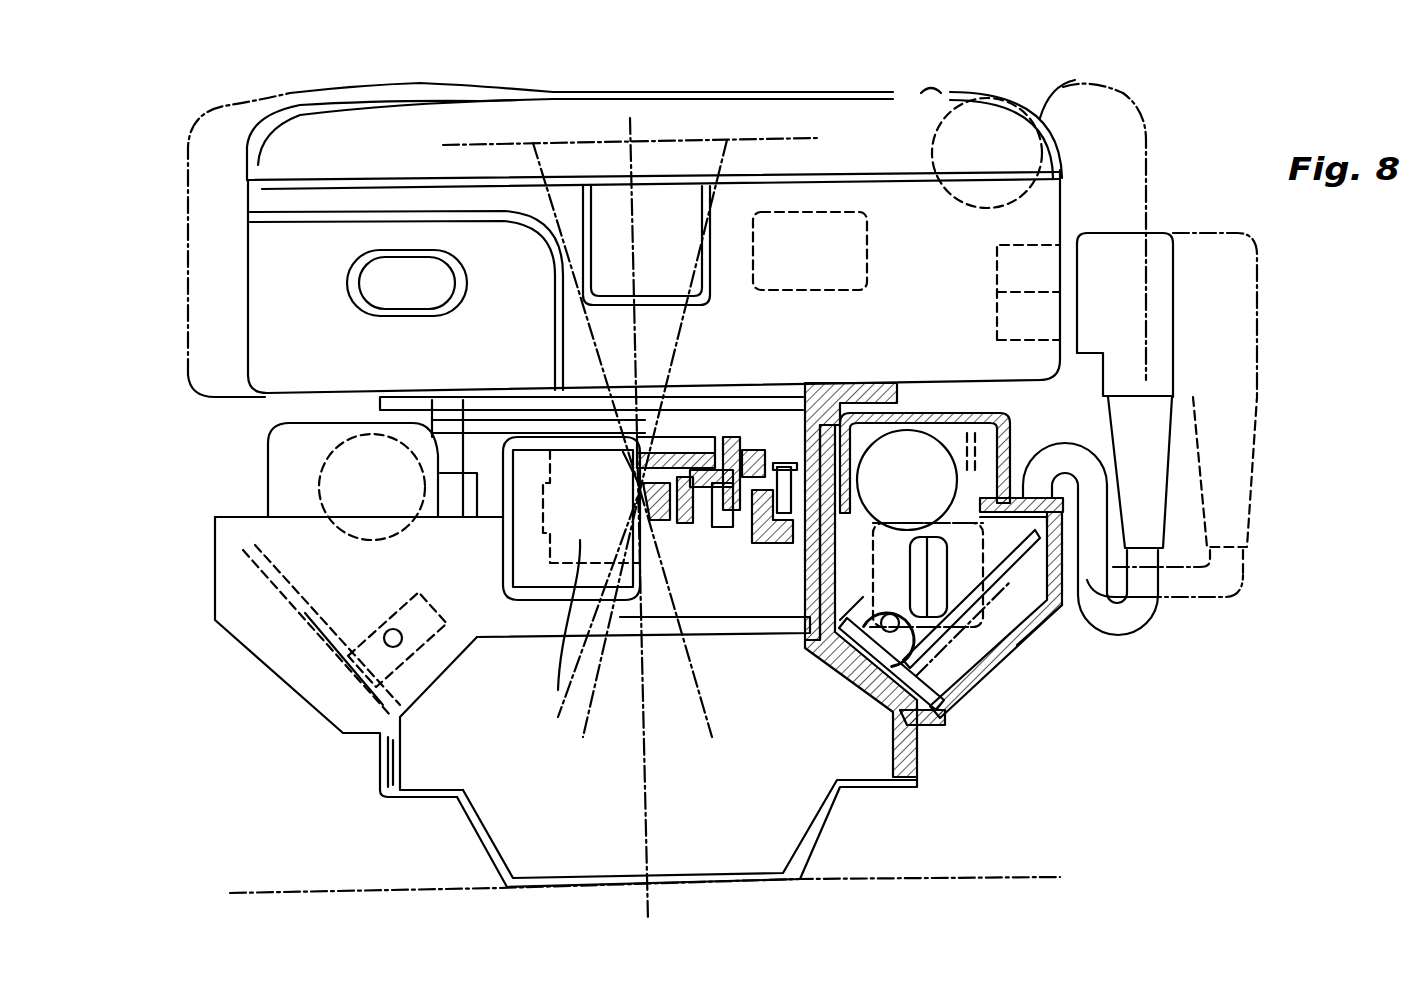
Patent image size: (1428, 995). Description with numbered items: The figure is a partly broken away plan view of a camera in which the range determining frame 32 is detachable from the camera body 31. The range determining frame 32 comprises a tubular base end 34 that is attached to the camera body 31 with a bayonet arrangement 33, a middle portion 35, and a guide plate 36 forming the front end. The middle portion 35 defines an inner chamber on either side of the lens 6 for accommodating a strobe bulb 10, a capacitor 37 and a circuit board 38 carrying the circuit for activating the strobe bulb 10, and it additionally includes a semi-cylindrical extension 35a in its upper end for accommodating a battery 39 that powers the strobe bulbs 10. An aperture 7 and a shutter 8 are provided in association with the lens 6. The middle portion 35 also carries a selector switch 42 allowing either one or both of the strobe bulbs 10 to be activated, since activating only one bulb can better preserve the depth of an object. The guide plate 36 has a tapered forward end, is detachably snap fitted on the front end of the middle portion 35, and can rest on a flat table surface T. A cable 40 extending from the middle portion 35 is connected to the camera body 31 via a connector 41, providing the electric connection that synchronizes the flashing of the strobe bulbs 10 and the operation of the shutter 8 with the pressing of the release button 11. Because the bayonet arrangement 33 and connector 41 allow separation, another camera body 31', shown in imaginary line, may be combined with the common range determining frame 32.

The lens 6 is at (663, 503).
The aperture 7 is at (700, 425).
The shutter 8 is at (690, 440).
The strobe bulb 10 is at (432, 696).
The release button 11 is at (360, 283).
The camera body 31 is at (1045, 104).
The camera body 31' is at (1175, 222).
The range determining frame 32 is at (1022, 704).
The bayonet arrangement 33 is at (867, 383).
The tubular base end 34 is at (477, 475).
The middle portion 35 is at (1040, 627).
The semi-cylindrical extension 35a is at (520, 543).
The guide plate 36 is at (870, 787).
The capacitor 37 is at (317, 490).
The circuit board 38 is at (305, 613).
The battery 39 is at (558, 634).
The cable 40 is at (1143, 617).
The connector 41 is at (1177, 323).
The selector switch 42 is at (1020, 650).
The table surface T is at (1067, 877).